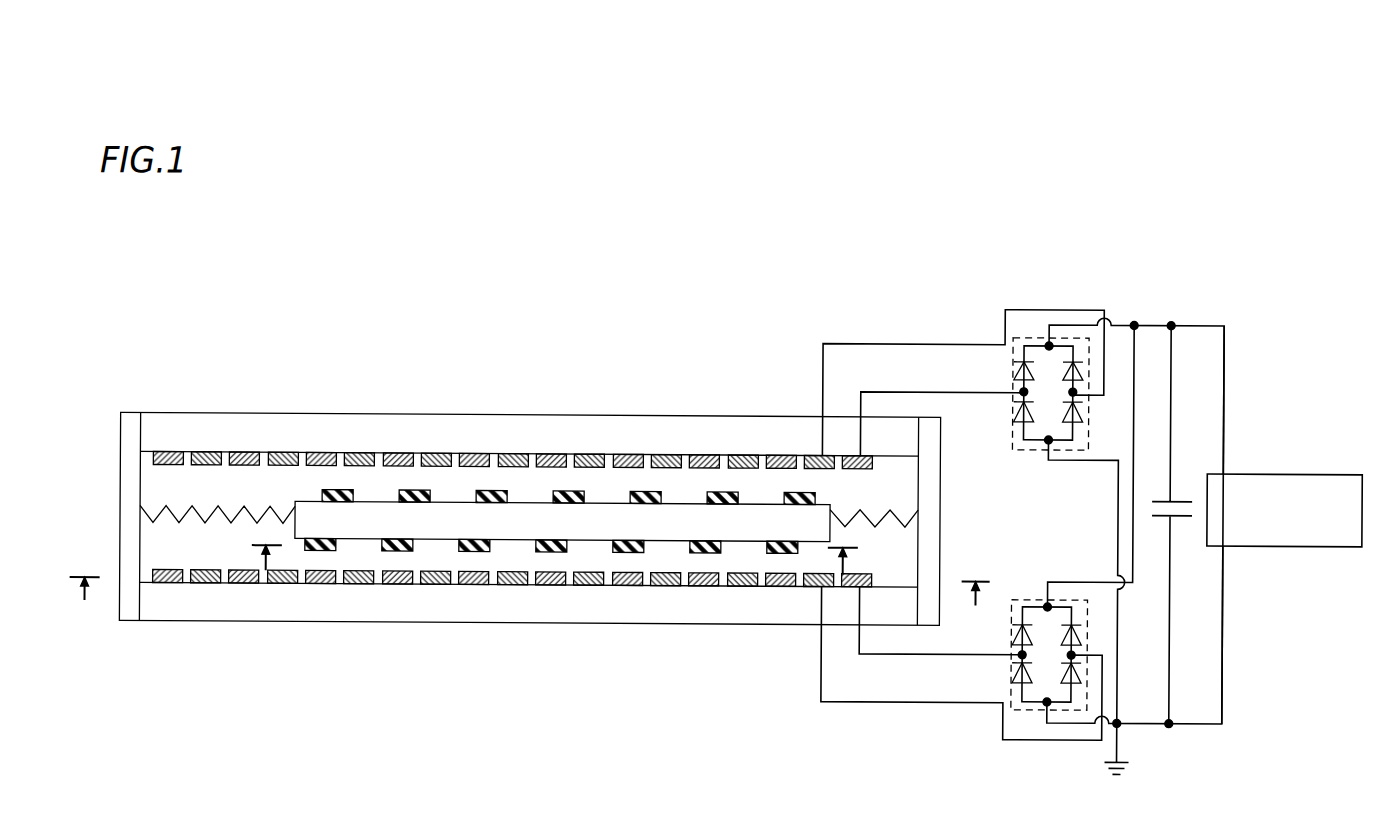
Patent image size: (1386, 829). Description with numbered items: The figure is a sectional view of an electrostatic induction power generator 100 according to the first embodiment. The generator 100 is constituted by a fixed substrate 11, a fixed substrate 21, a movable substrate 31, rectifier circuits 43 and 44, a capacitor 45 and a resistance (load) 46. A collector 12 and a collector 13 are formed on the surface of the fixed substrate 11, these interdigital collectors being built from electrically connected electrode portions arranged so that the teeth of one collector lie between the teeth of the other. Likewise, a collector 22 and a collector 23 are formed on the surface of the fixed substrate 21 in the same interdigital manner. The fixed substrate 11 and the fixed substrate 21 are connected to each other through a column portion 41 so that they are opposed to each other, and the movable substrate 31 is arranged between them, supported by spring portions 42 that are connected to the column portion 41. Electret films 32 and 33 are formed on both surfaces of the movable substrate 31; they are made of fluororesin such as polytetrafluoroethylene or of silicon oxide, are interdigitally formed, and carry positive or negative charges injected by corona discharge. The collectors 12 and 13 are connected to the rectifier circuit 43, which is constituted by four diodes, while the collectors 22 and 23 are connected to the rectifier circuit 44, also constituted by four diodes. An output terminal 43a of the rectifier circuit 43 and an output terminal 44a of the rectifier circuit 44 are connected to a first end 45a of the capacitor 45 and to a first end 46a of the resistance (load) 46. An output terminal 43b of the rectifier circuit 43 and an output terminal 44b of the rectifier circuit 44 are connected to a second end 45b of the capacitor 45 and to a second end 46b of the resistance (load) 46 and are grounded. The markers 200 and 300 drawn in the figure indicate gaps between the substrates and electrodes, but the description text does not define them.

The electrostatic induction power generator 100 is at (731, 248).
The fixed substrate 11 is at (686, 625).
The collector 12 is at (555, 587).
The collector 13 is at (440, 587).
The fixed substrate 21 is at (780, 432).
The collector 22 is at (705, 455).
The collector 23 is at (595, 455).
The movable substrate 31 is at (386, 520).
The electret film 32 is at (325, 553).
The electret film 33 is at (487, 492).
The column portion 41 is at (130, 430).
The spring portion 42 is at (250, 505).
The rectifier circuit 43 is at (1018, 595).
The output terminal 43a is at (1048, 596).
The output terminal 43b is at (1048, 722).
The rectifier circuit 44 is at (1016, 335).
The output terminal 44a is at (1043, 333).
The output terminal 44b is at (1048, 458).
The capacitor 45 is at (1160, 496).
The first end 45a is at (1180, 496).
The second end 45b is at (1178, 514).
The resistance (load) 46 is at (1275, 470).
The first end 46a is at (1243, 470).
The second end 46b is at (1245, 542).
The gap between movable body and substrate 200 is at (526, 606).
The gap between movable electrode and fixed electrode 300 is at (553, 561).